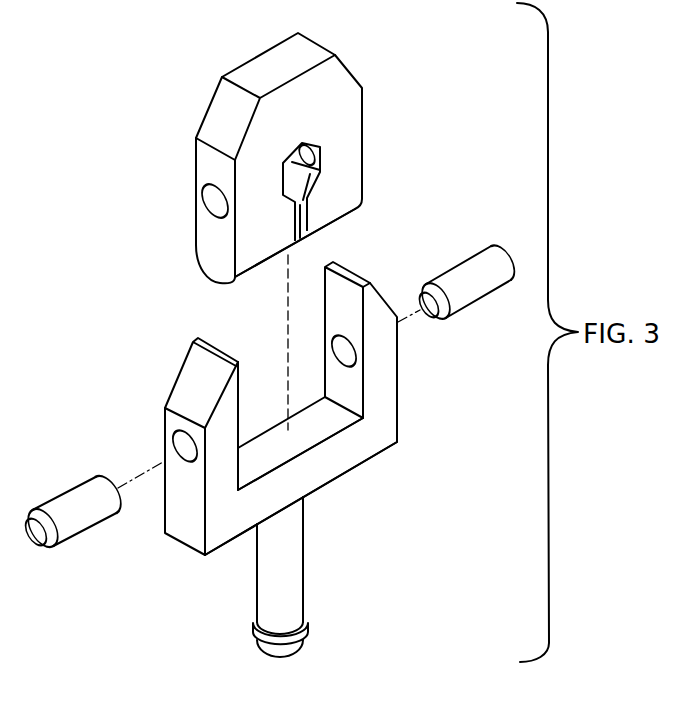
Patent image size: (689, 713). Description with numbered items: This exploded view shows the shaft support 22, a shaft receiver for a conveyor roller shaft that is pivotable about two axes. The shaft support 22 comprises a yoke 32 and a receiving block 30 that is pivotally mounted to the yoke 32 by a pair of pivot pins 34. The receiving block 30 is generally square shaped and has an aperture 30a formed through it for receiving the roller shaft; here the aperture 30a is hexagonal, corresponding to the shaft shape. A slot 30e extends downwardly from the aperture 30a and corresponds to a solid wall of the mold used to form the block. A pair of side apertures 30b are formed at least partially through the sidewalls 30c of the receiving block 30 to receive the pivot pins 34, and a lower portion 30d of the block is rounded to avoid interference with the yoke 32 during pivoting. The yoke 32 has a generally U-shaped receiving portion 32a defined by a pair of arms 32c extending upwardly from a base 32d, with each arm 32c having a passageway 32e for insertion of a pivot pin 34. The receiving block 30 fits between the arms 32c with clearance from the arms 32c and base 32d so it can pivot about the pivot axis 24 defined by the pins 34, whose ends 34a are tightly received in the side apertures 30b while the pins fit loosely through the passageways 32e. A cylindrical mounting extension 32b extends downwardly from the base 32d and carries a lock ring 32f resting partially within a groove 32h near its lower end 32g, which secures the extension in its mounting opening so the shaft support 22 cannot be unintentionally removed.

The shaft support 22 is at (92, 166).
The pivot axis 24 is at (145, 477).
The receiving block 30 is at (338, 83).
The aperture 30a is at (310, 178).
The side apertures 30b is at (311, 158).
The sidewalls 30c is at (213, 257).
The lower portion 30d is at (247, 279).
The slot 30e is at (298, 232).
The yoke 32 is at (382, 437).
The receiving portion 32a is at (335, 415).
The mounting extension 32b is at (295, 573).
The arms 32c is at (370, 302).
The base 32d is at (340, 463).
The passageway 32e is at (343, 350).
The lock ring 32f is at (308, 623).
The lower end 32g is at (280, 656).
The groove 32h is at (257, 627).
The pivot pins 34 is at (63, 505).
The ends 34a is at (425, 293).